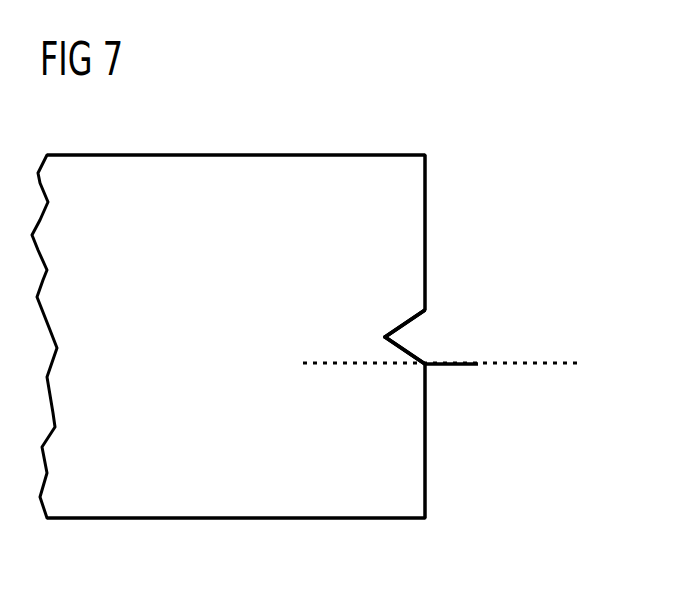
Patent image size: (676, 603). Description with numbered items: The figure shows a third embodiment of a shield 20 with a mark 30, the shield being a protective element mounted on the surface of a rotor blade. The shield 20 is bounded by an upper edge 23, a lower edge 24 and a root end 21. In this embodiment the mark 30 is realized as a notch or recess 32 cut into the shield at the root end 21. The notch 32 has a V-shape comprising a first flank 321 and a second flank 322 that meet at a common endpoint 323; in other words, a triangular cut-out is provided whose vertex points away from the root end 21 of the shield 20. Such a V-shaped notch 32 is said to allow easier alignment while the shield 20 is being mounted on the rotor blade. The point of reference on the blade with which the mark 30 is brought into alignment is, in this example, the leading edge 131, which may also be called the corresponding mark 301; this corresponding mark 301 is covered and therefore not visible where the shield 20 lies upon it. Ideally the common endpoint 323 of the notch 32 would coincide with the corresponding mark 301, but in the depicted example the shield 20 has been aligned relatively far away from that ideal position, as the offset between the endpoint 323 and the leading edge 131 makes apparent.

The shield 20 is at (396, 112).
The root end 21 is at (427, 206).
The upper edge 23 is at (302, 155).
The lower edge 24 is at (312, 520).
The mark 30 is at (355, 305).
The notch 32 is at (432, 333).
The first flank 321 is at (408, 322).
The second flank 322 is at (400, 348).
The common endpoint 323 is at (385, 338).
The corresponding mark 301 is at (460, 367).
The leading edge 131 is at (558, 362).